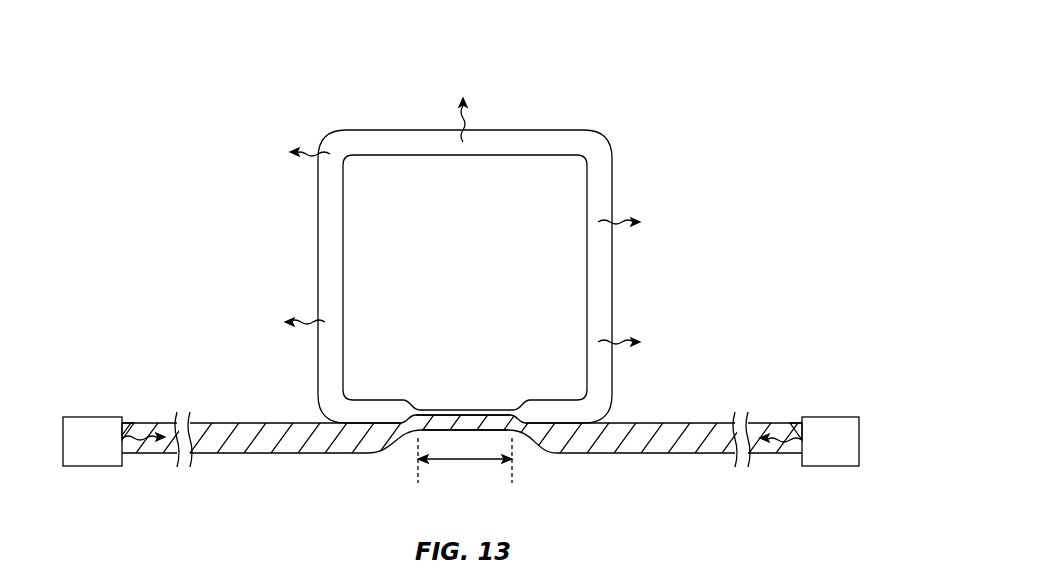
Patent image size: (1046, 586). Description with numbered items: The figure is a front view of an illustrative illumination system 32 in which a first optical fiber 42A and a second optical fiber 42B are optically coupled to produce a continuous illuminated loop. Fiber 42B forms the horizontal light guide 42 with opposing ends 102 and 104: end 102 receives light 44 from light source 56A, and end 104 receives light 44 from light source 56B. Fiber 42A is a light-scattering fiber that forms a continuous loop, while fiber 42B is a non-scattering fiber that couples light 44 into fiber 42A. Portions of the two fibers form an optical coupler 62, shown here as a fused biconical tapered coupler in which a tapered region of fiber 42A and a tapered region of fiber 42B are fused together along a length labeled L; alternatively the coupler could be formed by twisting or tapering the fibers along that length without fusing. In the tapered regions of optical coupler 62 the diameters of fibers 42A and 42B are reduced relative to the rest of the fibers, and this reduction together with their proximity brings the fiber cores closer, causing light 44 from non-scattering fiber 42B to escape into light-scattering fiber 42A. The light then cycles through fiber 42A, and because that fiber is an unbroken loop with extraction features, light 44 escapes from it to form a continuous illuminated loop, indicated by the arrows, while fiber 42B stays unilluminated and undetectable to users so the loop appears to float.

The illumination system 32 is at (635, 85).
The light guide 42 is at (613, 275).
The first optical fiber 42A is at (603, 175).
The second optical fiber 42B is at (663, 445).
The light 44 is at (470, 120).
The light source 56A is at (100, 455).
The light source 56B is at (830, 455).
The optical coupler 62 is at (413, 393).
The end 102 is at (126, 423).
The end 104 is at (808, 430).